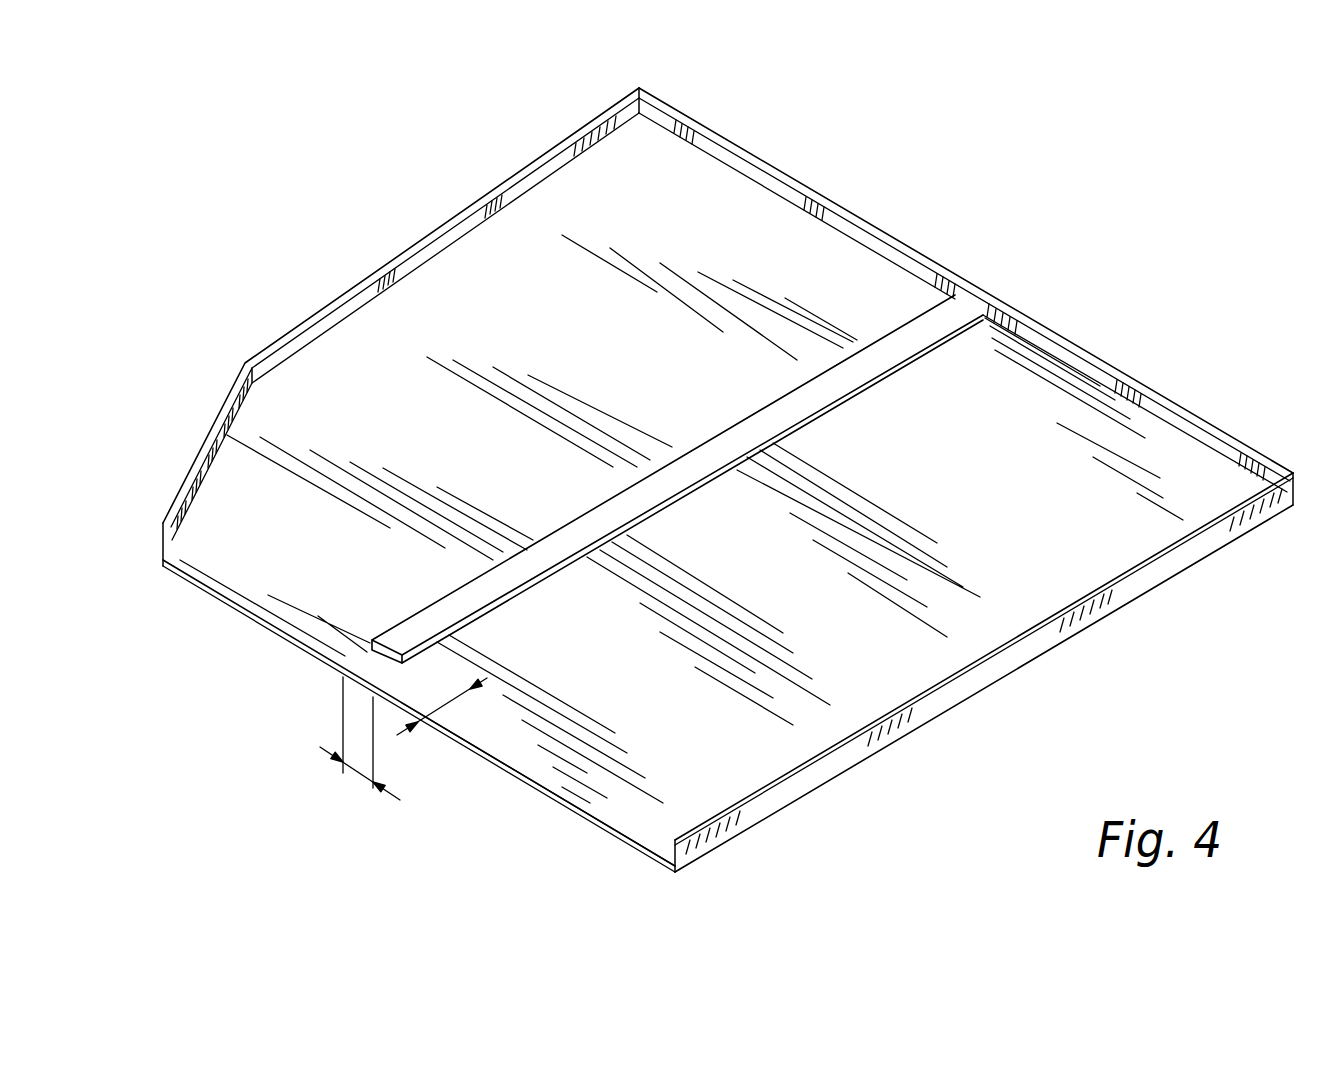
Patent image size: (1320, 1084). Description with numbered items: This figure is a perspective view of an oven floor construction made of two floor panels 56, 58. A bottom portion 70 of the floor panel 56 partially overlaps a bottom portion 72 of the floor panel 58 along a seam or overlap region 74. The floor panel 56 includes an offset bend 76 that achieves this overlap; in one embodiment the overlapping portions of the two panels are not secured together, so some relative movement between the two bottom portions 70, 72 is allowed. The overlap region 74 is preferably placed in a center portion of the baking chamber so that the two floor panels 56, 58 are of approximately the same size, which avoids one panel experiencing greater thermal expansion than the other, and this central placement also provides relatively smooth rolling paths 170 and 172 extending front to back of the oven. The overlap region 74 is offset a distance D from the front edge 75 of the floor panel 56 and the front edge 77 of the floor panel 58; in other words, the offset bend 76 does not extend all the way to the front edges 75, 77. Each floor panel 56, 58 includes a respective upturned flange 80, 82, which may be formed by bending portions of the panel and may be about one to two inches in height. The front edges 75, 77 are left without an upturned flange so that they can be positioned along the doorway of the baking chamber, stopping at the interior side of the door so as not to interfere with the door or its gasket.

The floor panel 56 is at (278, 322).
The floor panel 58 is at (1040, 682).
The bottom portion 70 is at (493, 294).
The bottom portion 72 is at (947, 420).
The overlap region 74 is at (358, 772).
The front edge 75 is at (250, 615).
The offset bend 76 is at (745, 428).
The front edge 77 is at (540, 793).
The upturned flange 80 is at (388, 268).
The upturned flange 82 is at (1172, 400).
The rolling path 170 is at (597, 205).
The rolling path 172 is at (847, 650).
The distance D is at (463, 722).